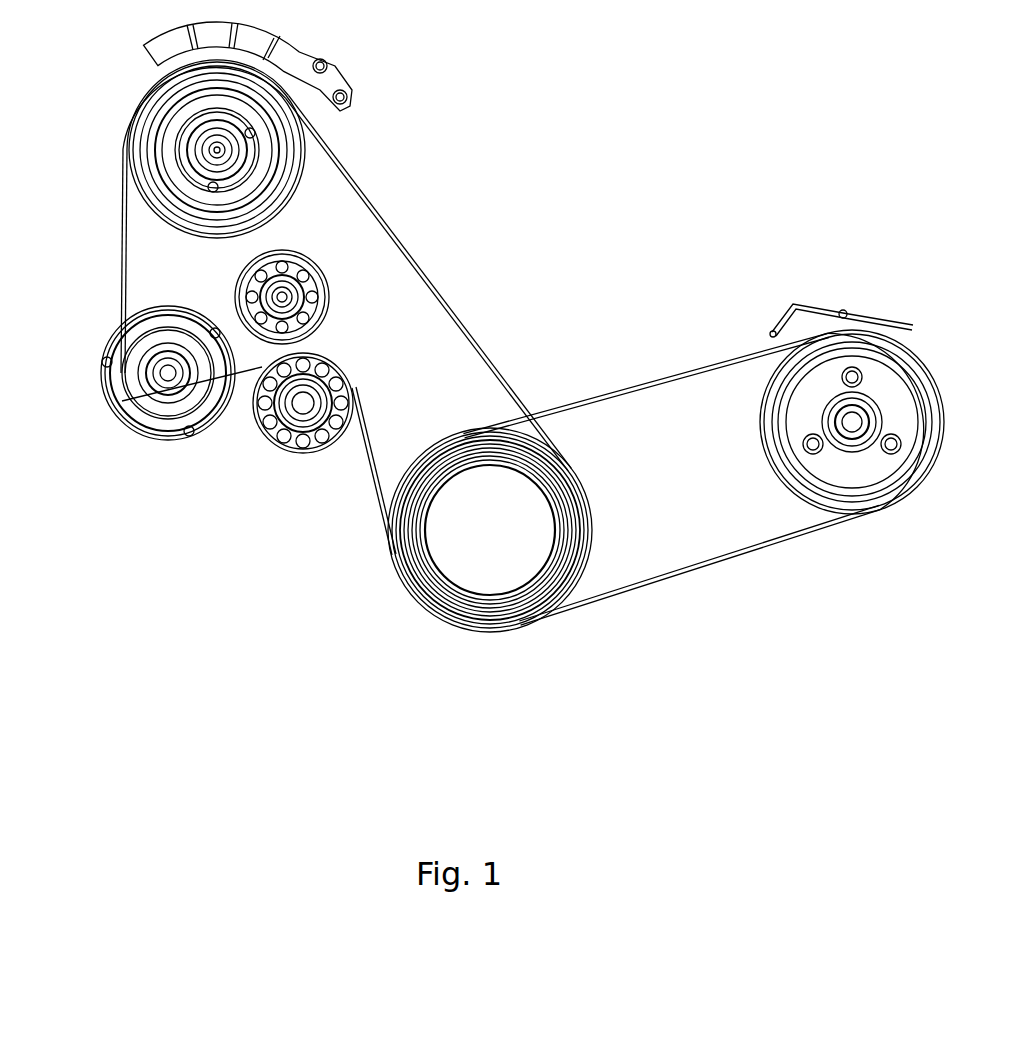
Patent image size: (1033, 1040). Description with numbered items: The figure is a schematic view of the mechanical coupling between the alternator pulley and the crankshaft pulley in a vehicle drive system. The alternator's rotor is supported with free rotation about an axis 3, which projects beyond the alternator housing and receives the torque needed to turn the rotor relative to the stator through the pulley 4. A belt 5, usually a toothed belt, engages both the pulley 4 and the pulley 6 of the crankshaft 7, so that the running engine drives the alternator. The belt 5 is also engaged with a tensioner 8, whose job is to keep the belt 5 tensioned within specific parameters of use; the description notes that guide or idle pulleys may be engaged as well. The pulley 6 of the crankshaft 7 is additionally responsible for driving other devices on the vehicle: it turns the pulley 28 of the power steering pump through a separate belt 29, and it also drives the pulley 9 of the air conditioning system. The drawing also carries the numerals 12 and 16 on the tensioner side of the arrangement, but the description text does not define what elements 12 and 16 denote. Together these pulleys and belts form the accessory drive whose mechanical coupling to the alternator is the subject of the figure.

The axis 3 is at (167, 375).
The pulley 4 is at (153, 408).
The belt 5 is at (440, 294).
The pulley of the crankshaft 6 is at (490, 598).
The crankshaft 7 is at (419, 565).
The tensioner 8 is at (277, 427).
The pulley of the air conditioning system 9 is at (158, 145).
The tensioner housing 12 is at (103, 363).
The belt tensioner 16 is at (133, 372).
The pulley of the power steering pump 28 is at (862, 466).
The belt 29 is at (700, 562).